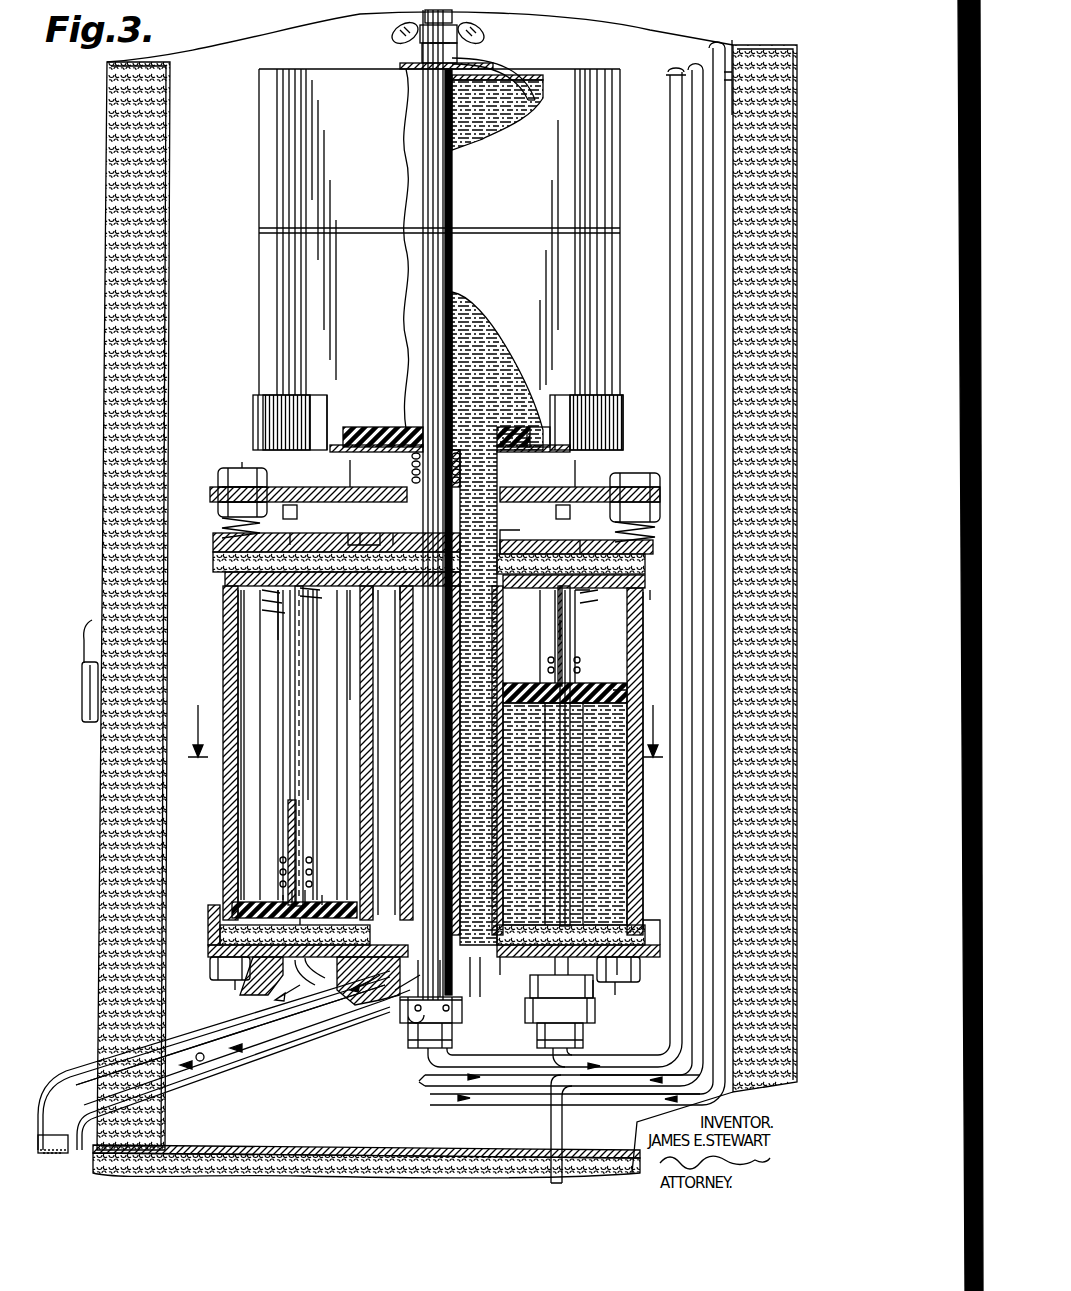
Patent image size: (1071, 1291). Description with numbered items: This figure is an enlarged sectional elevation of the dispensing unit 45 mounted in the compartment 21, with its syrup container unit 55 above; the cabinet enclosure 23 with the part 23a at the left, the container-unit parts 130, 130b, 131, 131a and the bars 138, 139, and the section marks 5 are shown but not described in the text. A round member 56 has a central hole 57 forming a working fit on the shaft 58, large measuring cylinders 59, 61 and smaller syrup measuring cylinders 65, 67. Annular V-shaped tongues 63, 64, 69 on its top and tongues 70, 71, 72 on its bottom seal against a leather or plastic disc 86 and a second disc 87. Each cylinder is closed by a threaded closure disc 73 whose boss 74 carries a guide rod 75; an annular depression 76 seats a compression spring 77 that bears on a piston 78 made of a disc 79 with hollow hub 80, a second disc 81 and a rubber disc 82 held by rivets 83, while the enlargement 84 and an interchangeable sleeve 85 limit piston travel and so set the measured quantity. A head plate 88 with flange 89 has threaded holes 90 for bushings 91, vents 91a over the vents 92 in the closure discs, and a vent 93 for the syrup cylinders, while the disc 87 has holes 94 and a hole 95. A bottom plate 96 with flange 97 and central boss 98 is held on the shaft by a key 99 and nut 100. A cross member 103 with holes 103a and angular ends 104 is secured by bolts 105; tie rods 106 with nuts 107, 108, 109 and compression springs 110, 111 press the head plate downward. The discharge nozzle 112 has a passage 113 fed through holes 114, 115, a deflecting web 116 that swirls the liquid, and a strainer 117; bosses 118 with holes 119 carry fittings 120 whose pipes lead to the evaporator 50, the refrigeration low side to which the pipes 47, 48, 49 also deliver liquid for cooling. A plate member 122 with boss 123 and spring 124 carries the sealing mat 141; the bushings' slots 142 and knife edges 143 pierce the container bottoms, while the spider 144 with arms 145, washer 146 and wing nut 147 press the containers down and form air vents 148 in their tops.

The section line 5 is at (425, 720).
The compartment 21 is at (780, 520).
The insulated door 23 is at (107, 368).
The door latch 23a is at (92, 662).
The dispensing unit 45 is at (222, 677).
The pipe 47 is at (550, 1092).
The pipe 48 is at (595, 1093).
The pipe 49 is at (642, 1107).
The refrigeration low side 50 is at (690, 630).
The syrup container unit 55 is at (250, 417).
The round member 56 is at (227, 617).
The central vertical hole 57 is at (460, 998).
The shaft 58 is at (437, 272).
The measuring cylinder 59 is at (253, 790).
The measuring cylinder 61 is at (662, 647).
The annular V-shaped tongue 63 is at (227, 568).
The second annular V-shaped tongue 64 is at (373, 528).
The syrup measuring cylinder 65 is at (400, 640).
The syrup measuring cylinder 67 is at (560, 633).
The third annular V-shaped tongue 69 is at (412, 597).
The annular V-shaped tongue 70 is at (658, 928).
The annular V-shaped tongue 71 is at (505, 973).
The annular V-shaped tongue 72 is at (465, 958).
The closure disc 73 is at (348, 597).
The boss 74 is at (307, 593).
The guide rod 75 is at (310, 690).
The annular depression 76 is at (278, 603).
The compression spring 77 is at (317, 697).
The piston 78 is at (257, 898).
The disc 79 is at (537, 650).
The hollow hub portion 80 is at (647, 638).
The second disc 81 is at (540, 700).
The disc of piston material 82 is at (600, 700).
The rivets 83 is at (543, 705).
The enlargement 84 is at (560, 1011).
The sleeve 85 is at (305, 822).
The disc 86 is at (355, 533).
The second disc 87 is at (618, 980).
The head plate 88 is at (553, 540).
The annular flange 89 is at (660, 590).
The threaded holes 90 is at (503, 520).
The special fittings 91 is at (503, 477).
The vents 91a is at (287, 540).
The vent 92 is at (287, 586).
The vent 93 is at (393, 533).
The holes 94 is at (637, 893).
The hole 95 is at (390, 920).
The bottom plate 96 is at (507, 957).
The annular flange 97 is at (210, 913).
The central boss 98 is at (457, 983).
The key 99 is at (358, 1010).
The nut 100 is at (385, 1030).
The cross member 103 is at (590, 492).
The holes 103a is at (250, 500).
The angular end 104 is at (217, 508).
The bolts 105 is at (292, 490).
The tie rods 106 is at (222, 525).
The nuts 107 is at (230, 973).
The nuts 108 is at (220, 478).
The nuts 109 is at (222, 502).
The compression springs 110 is at (662, 511).
The compression spring 111 is at (352, 497).
The discharge nozzle 112 is at (240, 1057).
The passage 113 is at (208, 1067).
The hole 114 is at (300, 962).
The hole 115 is at (360, 978).
The deflecting web 116 is at (303, 985).
The strainer 117 is at (60, 1153).
The bosses 118 is at (592, 980).
The hole 119 is at (570, 965).
The fittings 120 is at (415, 1030).
The plate member 122 is at (337, 452).
The boss 123 is at (407, 460).
The spring 124 is at (412, 472).
The filter plate 130 is at (262, 400).
The filter plate portion 130b is at (317, 404).
The filter plate 131 is at (613, 408).
The filter plate portion 131a is at (560, 400).
The cross bar 138 is at (277, 245).
The cross bar 139 is at (605, 245).
The sealing mat 141 is at (385, 425).
The V-shaped slot 142 is at (503, 460).
The knife edges 143 is at (470, 425).
The spider 144 is at (422, 60).
The arms 145 is at (510, 63).
The washer 146 is at (474, 55).
The wing nut 147 is at (492, 26).
The air vents 148 is at (533, 72).